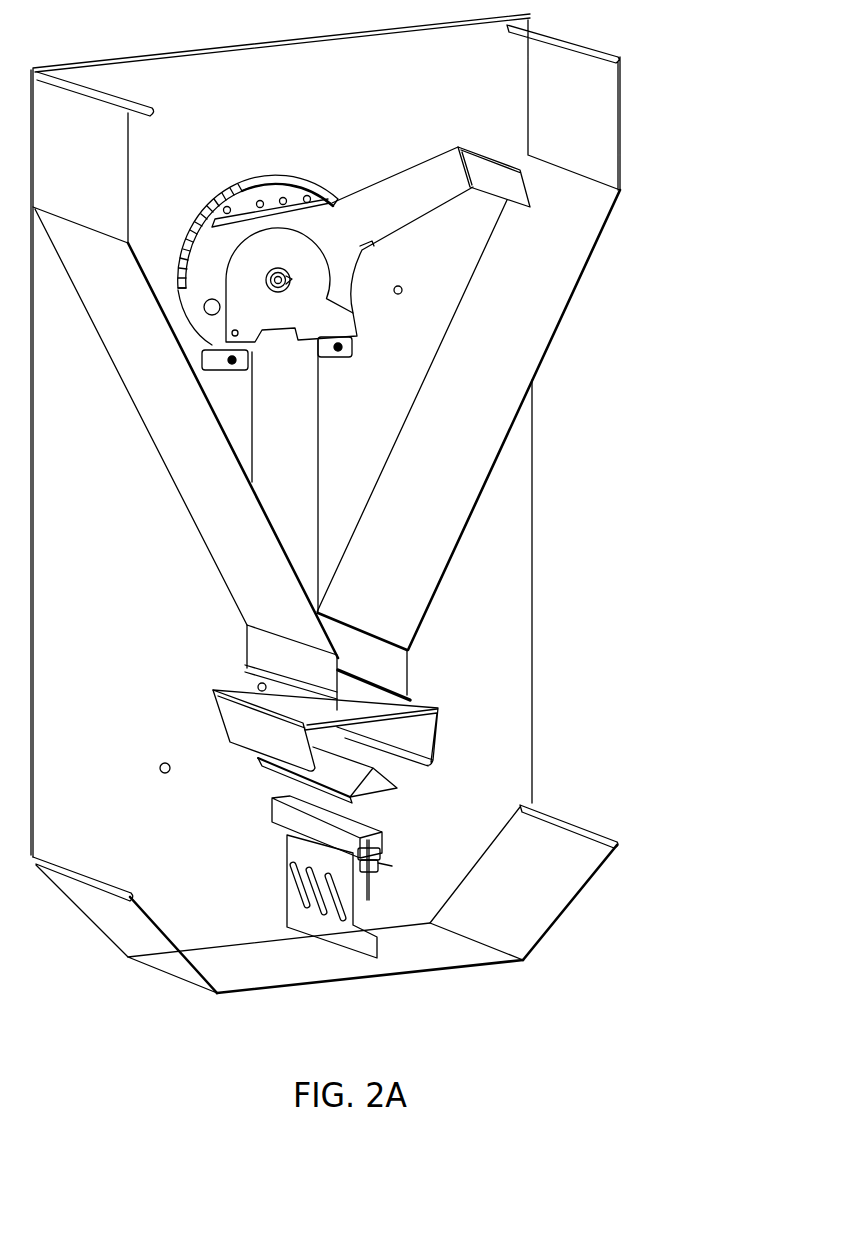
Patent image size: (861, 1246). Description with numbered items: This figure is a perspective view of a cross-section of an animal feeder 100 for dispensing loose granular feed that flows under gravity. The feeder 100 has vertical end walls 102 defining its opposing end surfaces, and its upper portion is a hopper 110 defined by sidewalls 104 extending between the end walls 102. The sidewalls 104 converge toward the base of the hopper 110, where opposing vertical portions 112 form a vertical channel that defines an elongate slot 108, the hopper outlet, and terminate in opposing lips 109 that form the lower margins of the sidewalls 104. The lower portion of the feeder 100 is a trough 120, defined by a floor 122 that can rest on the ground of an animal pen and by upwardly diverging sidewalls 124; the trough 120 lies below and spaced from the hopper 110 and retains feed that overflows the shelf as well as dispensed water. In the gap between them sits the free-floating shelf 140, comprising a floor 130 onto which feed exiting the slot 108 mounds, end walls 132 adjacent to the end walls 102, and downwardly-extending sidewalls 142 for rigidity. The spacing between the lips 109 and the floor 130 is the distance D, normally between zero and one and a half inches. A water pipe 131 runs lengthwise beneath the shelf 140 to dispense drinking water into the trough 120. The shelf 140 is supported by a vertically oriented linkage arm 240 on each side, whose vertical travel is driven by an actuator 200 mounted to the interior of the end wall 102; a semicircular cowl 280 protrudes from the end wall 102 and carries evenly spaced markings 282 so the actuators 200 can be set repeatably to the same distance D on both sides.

The animal feeder 100 is at (684, 496).
The end wall 102 is at (498, 607).
The sidewall 104 is at (552, 253).
The hopper 110 is at (525, 318).
The elongate slot 108 is at (252, 641).
The lip 109 is at (243, 668).
The vertical portion 112 is at (303, 669).
The upwardly diverging sidewall 124 is at (104, 915).
The trough 120 is at (455, 970).
The floor 122 is at (289, 970).
The actuator 200 is at (324, 172).
The cowl 280 is at (253, 183).
The markings 282 is at (192, 247).
The linkage arm 240 is at (292, 412).
The shelf 140 is at (447, 742).
The floor 130 is at (440, 708).
The downwardly-extending sidewall 142 is at (232, 718).
The end wall 132 is at (383, 789).
The water pipe 131 is at (272, 818).
The distance d D is at (292, 716).